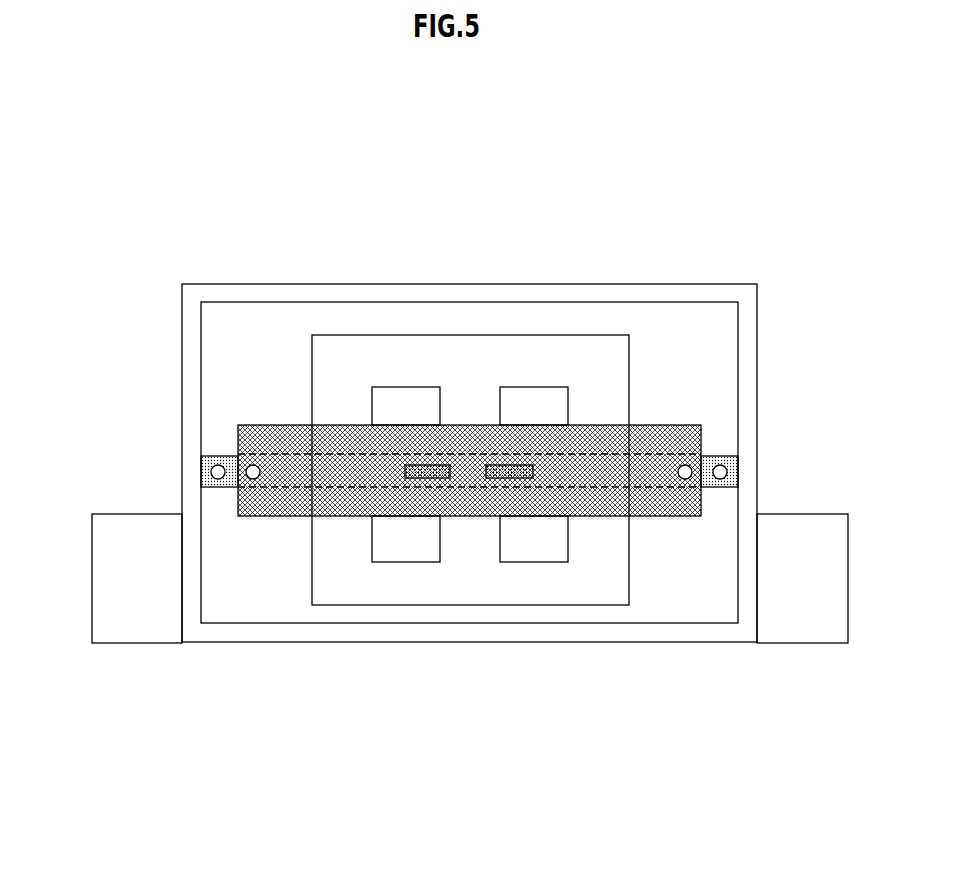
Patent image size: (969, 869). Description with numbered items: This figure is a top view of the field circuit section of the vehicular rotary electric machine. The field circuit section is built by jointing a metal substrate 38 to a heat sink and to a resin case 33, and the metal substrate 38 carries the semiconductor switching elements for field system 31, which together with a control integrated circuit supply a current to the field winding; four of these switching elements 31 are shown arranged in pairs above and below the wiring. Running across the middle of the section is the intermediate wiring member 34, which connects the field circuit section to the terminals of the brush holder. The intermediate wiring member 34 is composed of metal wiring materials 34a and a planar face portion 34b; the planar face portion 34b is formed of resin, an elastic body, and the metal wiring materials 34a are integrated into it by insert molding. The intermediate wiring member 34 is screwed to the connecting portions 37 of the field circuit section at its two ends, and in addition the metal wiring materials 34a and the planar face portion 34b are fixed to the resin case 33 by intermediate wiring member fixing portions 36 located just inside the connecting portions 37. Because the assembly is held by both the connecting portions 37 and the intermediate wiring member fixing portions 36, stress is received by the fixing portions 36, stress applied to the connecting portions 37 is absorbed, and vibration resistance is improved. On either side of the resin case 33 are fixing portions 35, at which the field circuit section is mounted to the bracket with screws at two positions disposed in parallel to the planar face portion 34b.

The semiconductor switching elements for field system 31 is at (402, 400).
The resin case 33 is at (465, 290).
The intermediate wiring member 34 is at (102, 245).
The metal wiring materials 34a is at (413, 466).
The planar face portion 34b is at (272, 433).
The fixing portions 35 is at (153, 630).
The intermediate wiring member fixing portions 36 is at (253, 480).
The connecting portions 37 is at (216, 468).
The metal substrate 38 is at (487, 570).